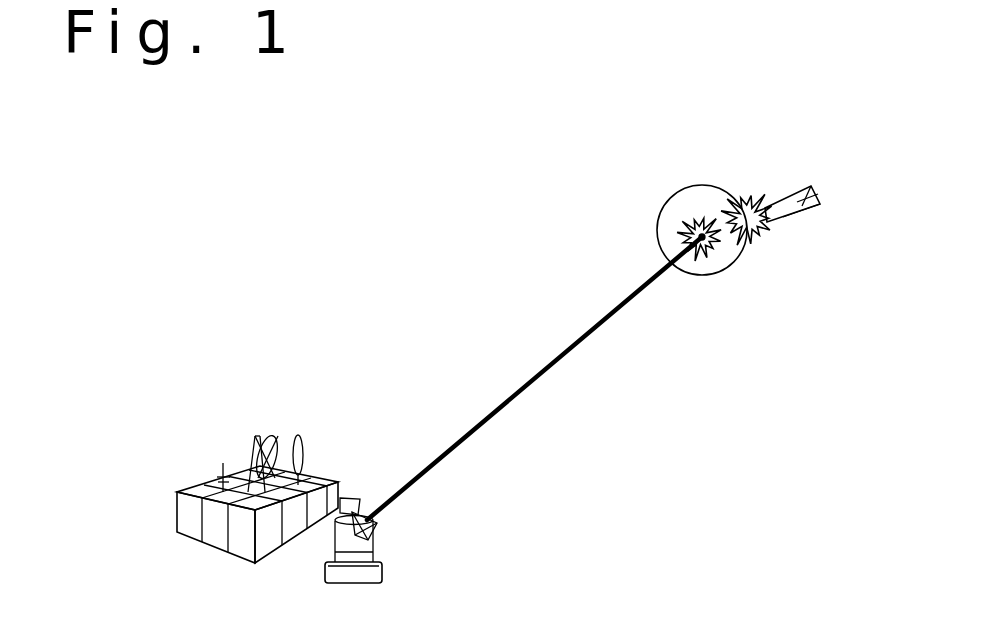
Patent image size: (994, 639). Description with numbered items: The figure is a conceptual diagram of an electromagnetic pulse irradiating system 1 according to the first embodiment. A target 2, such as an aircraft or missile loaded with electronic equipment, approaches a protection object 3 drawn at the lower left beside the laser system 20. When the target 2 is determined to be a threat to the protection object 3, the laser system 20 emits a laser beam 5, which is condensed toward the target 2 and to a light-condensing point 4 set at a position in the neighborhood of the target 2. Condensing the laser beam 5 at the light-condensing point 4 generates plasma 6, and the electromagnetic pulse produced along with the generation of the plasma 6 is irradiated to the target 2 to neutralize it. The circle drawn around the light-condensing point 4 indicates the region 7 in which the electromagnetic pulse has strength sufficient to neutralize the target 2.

The electromagnetic pulse irradiating system 1 is at (430, 570).
The target 2 is at (800, 220).
The protection object 3 is at (187, 488).
The light-condensing point 4 is at (710, 250).
The laser beam 5 is at (518, 395).
The plasma 6 is at (690, 235).
The region 7 is at (697, 195).
The laser system 20 is at (365, 578).